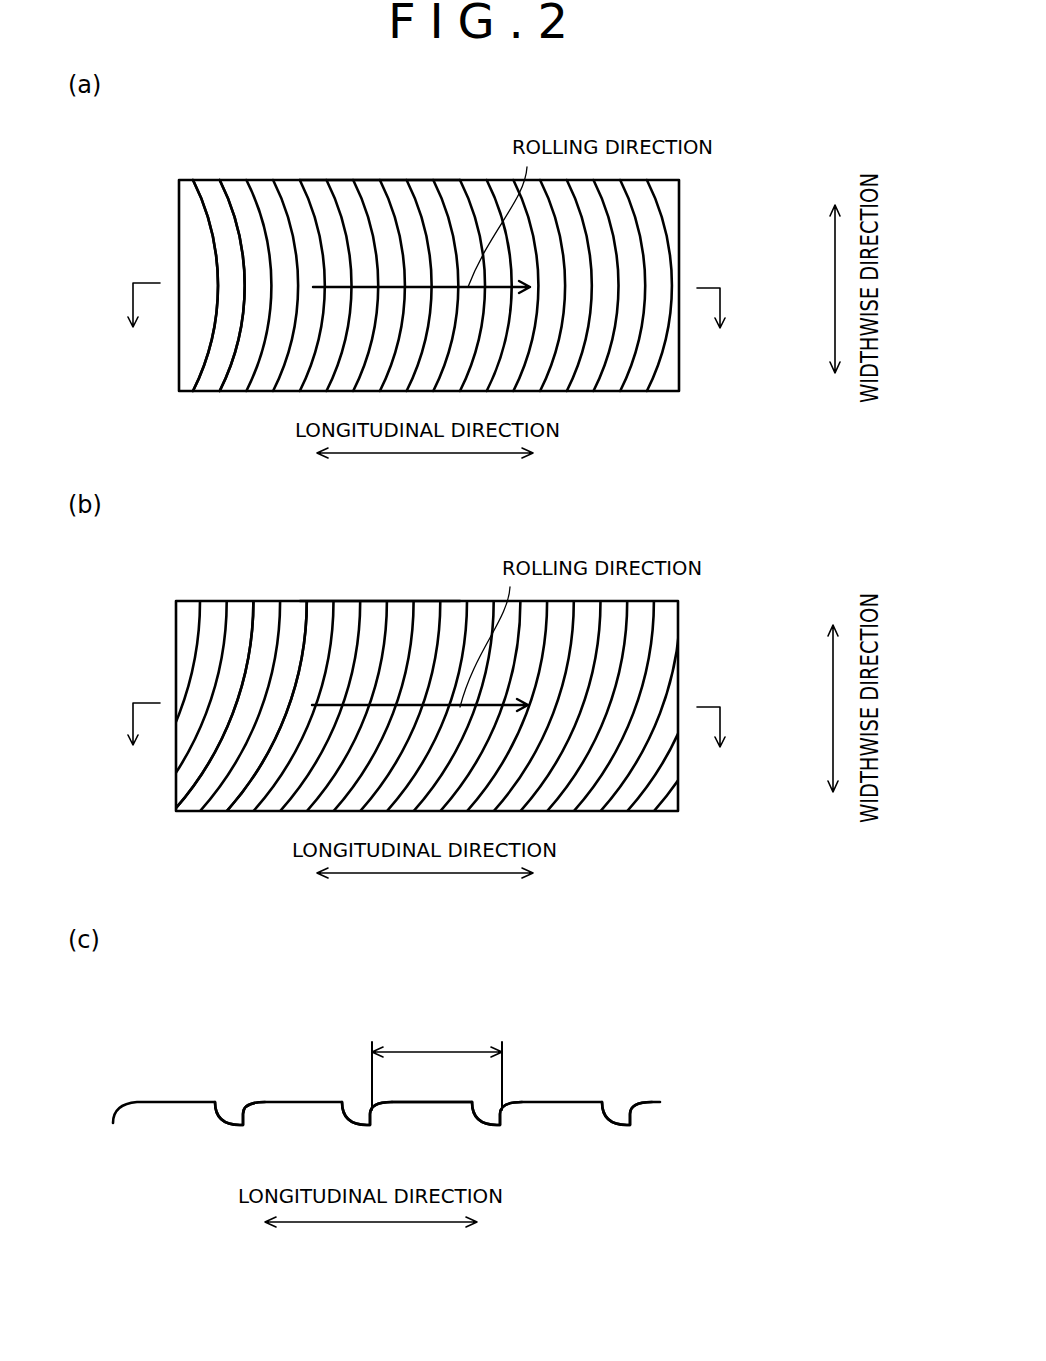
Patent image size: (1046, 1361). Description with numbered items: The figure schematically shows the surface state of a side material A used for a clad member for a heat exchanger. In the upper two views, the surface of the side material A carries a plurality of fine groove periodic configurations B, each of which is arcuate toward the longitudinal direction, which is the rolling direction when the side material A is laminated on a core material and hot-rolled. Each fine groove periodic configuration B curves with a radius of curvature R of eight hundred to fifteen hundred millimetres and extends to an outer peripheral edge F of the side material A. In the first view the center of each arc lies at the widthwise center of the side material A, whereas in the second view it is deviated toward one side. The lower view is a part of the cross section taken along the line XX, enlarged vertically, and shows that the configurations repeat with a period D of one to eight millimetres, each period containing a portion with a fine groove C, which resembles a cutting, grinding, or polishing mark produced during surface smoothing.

The side material A is at (680, 235).
The fine groove periodic configuration B is at (236, 185).
The fine groove C is at (245, 378).
The period D is at (437, 1067).
The outer peripheral edge F is at (386, 180).
The radius of curvature R is at (201, 254).
The line XX X is at (426, 519).